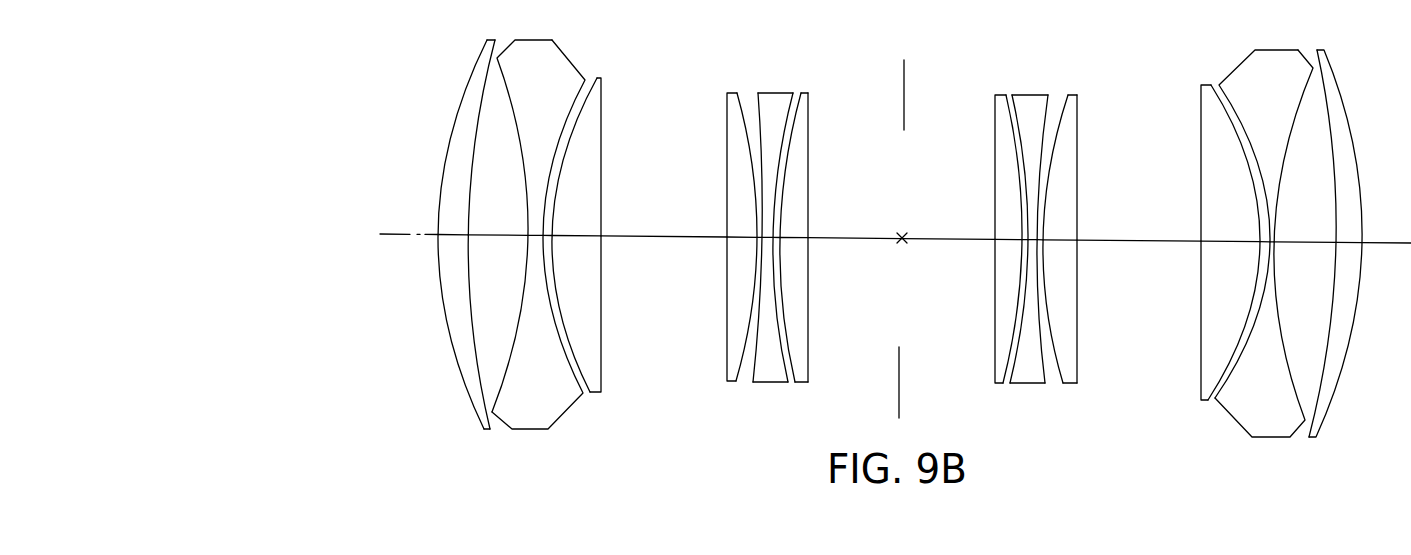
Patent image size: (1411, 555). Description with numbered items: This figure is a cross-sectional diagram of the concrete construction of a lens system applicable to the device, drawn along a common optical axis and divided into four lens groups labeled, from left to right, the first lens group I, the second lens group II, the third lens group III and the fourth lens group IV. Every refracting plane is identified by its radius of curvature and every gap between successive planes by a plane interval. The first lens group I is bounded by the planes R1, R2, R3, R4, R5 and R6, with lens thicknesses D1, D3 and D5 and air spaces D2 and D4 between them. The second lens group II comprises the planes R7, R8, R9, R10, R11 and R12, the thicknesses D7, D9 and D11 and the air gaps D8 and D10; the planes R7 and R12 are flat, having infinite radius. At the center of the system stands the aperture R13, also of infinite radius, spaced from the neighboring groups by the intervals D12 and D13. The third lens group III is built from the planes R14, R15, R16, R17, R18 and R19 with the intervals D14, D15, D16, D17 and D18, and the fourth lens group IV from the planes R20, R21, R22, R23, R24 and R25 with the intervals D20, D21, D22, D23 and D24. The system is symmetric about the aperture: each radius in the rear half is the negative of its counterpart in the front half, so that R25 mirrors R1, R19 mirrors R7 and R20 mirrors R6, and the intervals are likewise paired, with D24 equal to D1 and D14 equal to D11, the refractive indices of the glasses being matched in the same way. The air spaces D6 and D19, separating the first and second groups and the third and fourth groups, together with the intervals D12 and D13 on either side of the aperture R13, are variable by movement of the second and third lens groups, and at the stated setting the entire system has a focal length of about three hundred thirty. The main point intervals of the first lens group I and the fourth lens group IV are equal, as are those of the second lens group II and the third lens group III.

The first lens group I is at (468, 33).
The second lens group II is at (720, 76).
The third lens group III is at (985, 78).
The fourth lens group IV is at (1202, 42).
The radius of curvature of the first plane R1 is at (472, 412).
The radius of curvature of the second plane R2 is at (489, 428).
The radius of curvature of the third plane R3 is at (496, 403).
The radius of curvature of the fourth plane R4 is at (580, 392).
The radius of curvature of the fifth plane R5 is at (586, 386).
The radius of curvature of the sixth plane R6 is at (601, 383).
The radius of curvature of the seventh plane R7 is at (725, 369).
The radius of curvature of the eighth plane R8 is at (736, 376).
The radius of curvature of the ninth plane R9 is at (752, 375).
The radius of curvature of the tenth plane R10 is at (786, 374).
The radius of curvature of the eleventh plane R11 is at (795, 377).
The radius of curvature of the twelfth plane R12 is at (808, 368).
The aperture R13 is at (898, 395).
The radius of curvature of the fourteenth plane R14 is at (993, 373).
The radius of curvature of the fifteenth plane R15 is at (1003, 380).
The radius of curvature of the sixteenth plane R16 is at (1012, 376).
The radius of curvature of the seventeenth plane R17 is at (1039, 373).
The radius of curvature of the eighteenth plane R18 is at (1062, 378).
The radius of curvature of the nineteenth plane R19 is at (1077, 372).
The radius of curvature of the twentieth plane R20 is at (1200, 376).
The radius of curvature of the twenty-first plane R21 is at (1208, 398).
The radius of curvature of the twenty-second plane R22 is at (1220, 394).
The radius of curvature of the twenty-third plane R23 is at (1300, 409).
The radius of curvature of the twenty-fourth plane R24 is at (1311, 430).
The radius of curvature of the twenty-fifth plane R25 is at (1321, 420).
The first plane interval D1 is at (453, 224).
The second plane interval D2 is at (498, 224).
The third plane interval D3 is at (533, 233).
The fourth plane interval D4 is at (545, 240).
The fifth plane interval D5 is at (576, 224).
The sixth plane interval D6 is at (664, 224).
The seventh plane interval D7 is at (738, 237).
The eighth plane interval D8 is at (757, 240).
The ninth plane interval D9 is at (775, 240).
The tenth plane interval D10 is at (779, 241).
The eleventh plane interval D11 is at (799, 240).
The twelfth plane interval D12 is at (855, 225).
The thirteenth plane interval D13 is at (948, 228).
The fourteenth plane interval D14 is at (1007, 238).
The fifteenth plane interval D15 is at (1025, 242).
The sixteenth plane interval D16 is at (1032, 243).
The seventeenth plane interval D17 is at (1042, 238).
The eighteenth plane interval D18 is at (1061, 243).
The nineteenth plane interval D19 is at (1139, 230).
The twentieth plane interval D20 is at (1230, 232).
The twenty-first plane interval D21 is at (1260, 246).
The twenty-second plane interval D22 is at (1273, 240).
The twenty-third plane interval D23 is at (1305, 232).
The twenty-fourth plane interval D24 is at (1357, 243).